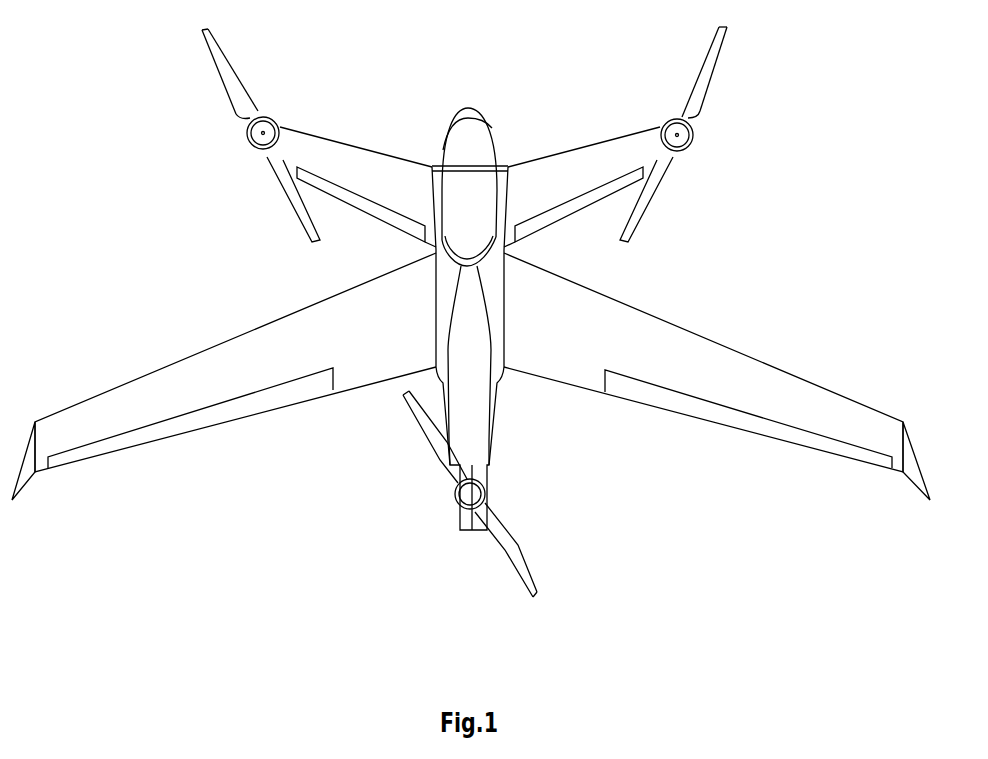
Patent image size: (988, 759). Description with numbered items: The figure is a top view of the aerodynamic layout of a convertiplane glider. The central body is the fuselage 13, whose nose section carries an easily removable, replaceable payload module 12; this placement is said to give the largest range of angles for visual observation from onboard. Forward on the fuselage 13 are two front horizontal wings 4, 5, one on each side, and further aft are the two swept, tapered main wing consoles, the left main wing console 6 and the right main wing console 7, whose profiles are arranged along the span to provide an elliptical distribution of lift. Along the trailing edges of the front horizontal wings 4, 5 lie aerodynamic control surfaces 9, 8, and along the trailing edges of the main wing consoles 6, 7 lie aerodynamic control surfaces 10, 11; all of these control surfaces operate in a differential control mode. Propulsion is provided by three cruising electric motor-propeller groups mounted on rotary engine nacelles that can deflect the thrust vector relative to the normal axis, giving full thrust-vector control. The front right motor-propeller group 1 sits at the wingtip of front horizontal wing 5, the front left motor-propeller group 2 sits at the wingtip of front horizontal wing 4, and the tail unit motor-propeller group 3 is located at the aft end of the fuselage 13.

The front right motor-propeller group 1 is at (678, 136).
The front left motor-propeller group 2 is at (262, 136).
The tail unit motor-propeller group 3 is at (458, 509).
The front horizontal wing 4 is at (355, 167).
The front horizontal wing 5 is at (580, 168).
The left main wing console 6 is at (253, 348).
The right main wing console 7 is at (697, 342).
The aerodynamic control surface 8 is at (547, 220).
The aerodynamic control surface 9 is at (397, 220).
The aerodynamic control surface 10 is at (267, 405).
The aerodynamic control surface 11 is at (675, 407).
The replaceable payload module 12 is at (468, 135).
The fuselage 13 is at (472, 418).